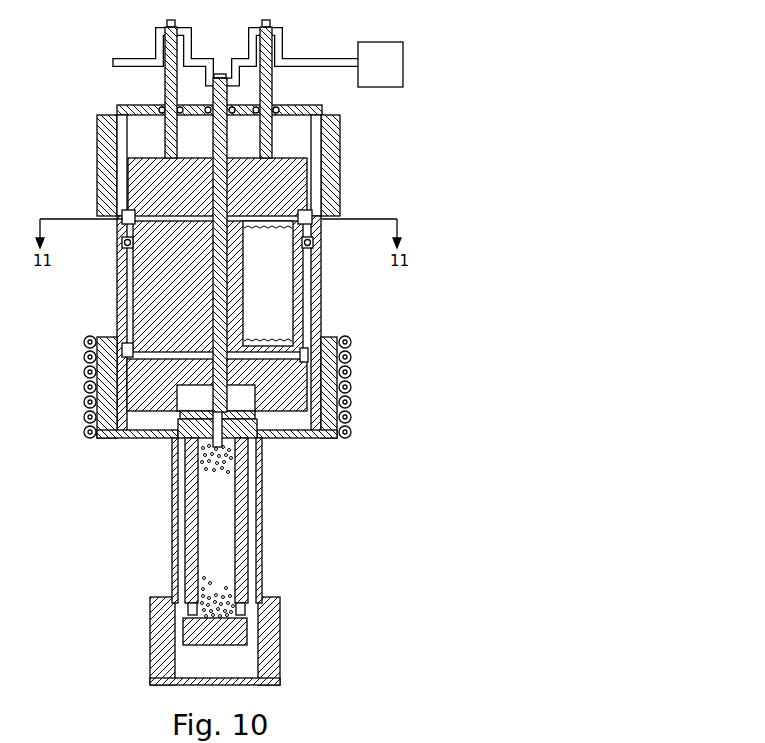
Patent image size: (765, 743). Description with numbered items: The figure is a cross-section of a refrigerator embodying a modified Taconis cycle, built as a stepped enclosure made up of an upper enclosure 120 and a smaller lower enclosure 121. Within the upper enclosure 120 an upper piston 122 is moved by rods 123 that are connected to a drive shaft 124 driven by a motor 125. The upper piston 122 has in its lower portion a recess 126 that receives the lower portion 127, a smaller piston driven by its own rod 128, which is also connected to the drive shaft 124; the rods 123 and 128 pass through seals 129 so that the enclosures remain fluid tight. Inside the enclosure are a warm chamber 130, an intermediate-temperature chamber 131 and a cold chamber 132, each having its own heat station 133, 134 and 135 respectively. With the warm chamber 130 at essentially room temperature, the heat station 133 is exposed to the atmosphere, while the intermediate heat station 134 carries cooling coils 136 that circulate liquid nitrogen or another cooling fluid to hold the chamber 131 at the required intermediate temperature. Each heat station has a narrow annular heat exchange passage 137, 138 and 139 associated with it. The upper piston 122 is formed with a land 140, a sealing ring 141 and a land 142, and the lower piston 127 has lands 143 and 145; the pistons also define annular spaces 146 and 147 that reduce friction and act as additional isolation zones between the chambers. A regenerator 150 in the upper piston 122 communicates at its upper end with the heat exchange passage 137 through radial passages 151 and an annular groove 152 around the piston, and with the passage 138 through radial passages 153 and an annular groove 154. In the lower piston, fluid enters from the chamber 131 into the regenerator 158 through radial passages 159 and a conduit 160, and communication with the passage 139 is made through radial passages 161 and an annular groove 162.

The upper enclosure 120 is at (318, 284).
The lower enclosure 121 is at (258, 539).
The upper piston 122 is at (288, 200).
The rods 123 is at (272, 78).
The drive shaft 124 is at (304, 58).
The motor 125 is at (375, 44).
The recess 126 is at (117, 436).
The lower portion 127 is at (241, 505).
The rod 128 is at (226, 93).
The seals 129 is at (163, 103).
The warm chamber 130 is at (295, 144).
The intermediate-temperature chamber 131 is at (288, 424).
The cold chamber 132 is at (226, 672).
The heat station 133 is at (330, 140).
The heat station 134 is at (330, 342).
The heat station 135 is at (281, 673).
The cooling coils 136 is at (352, 402).
The annular heat exchange passage 137 is at (311, 177).
The annular heat exchange passage 138 is at (352, 366).
The annular heat exchange passage 139 is at (251, 632).
The land 140 is at (120, 249).
The sealing ring 141 is at (122, 242).
The land 142 is at (118, 331).
The land 143 is at (200, 403).
The land 145 is at (172, 584).
The annular space 146 is at (126, 288).
The annular space 147 is at (181, 530).
The regenerator 150 is at (283, 299).
The radial passages 151 is at (318, 224).
The annular groove 152 is at (126, 219).
The radial passages 153 is at (117, 392).
The annular groove 154 is at (120, 352).
The regenerator 158 is at (216, 567).
The radial passages 159 is at (248, 446).
The conduit 160 is at (183, 448).
The radial passages 161 is at (244, 606).
The annular groove 162 is at (243, 612).